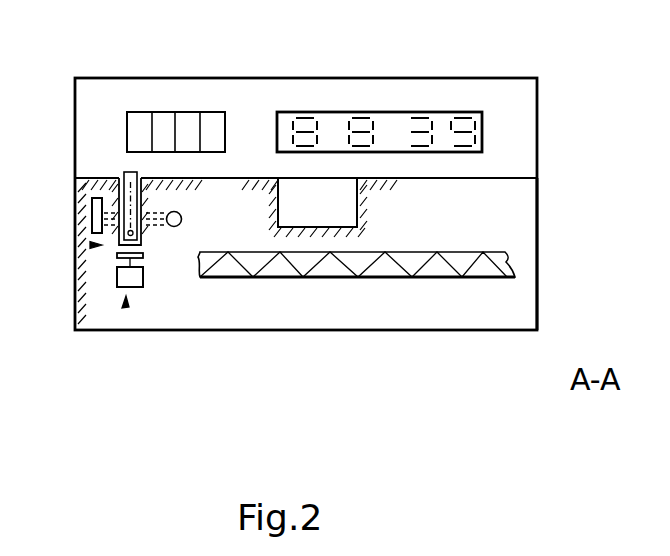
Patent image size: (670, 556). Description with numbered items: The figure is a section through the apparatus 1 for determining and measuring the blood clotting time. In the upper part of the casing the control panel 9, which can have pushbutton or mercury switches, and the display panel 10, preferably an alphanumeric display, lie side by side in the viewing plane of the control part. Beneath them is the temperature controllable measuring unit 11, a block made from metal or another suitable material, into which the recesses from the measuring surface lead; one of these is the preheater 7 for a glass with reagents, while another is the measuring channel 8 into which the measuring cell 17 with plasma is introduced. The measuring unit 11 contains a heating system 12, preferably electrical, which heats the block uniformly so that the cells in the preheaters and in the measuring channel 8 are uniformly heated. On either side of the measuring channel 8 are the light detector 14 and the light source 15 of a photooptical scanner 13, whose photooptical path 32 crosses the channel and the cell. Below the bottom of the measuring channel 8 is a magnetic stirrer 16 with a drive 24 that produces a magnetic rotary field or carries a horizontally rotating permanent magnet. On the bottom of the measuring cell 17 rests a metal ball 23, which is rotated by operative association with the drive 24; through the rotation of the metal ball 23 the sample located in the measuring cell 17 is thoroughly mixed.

The apparatus 1 is at (581, 82).
The preheater 7 is at (343, 202).
The measuring channel 8 is at (146, 246).
The control panel 9 is at (167, 112).
The display panel 10 is at (390, 120).
The measuring unit 11 is at (521, 209).
The heating system 12 is at (435, 268).
The photooptical scanner 13 is at (92, 245).
The light detector 14 is at (92, 203).
The light source 15 is at (174, 227).
The magnetic stirrer 16 is at (125, 300).
The measuring cell 17 is at (124, 176).
The metal ball 23 is at (118, 246).
The drive 24 is at (118, 268).
The photooptical path 32 is at (153, 215).